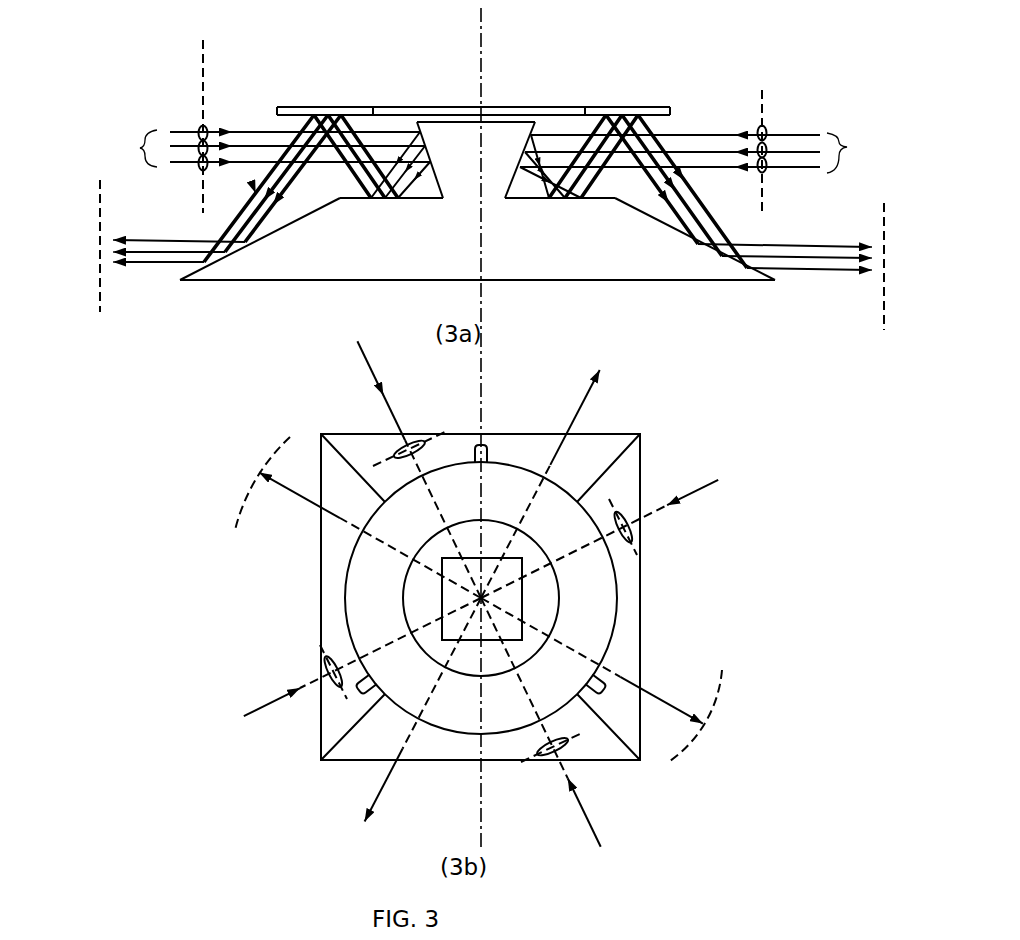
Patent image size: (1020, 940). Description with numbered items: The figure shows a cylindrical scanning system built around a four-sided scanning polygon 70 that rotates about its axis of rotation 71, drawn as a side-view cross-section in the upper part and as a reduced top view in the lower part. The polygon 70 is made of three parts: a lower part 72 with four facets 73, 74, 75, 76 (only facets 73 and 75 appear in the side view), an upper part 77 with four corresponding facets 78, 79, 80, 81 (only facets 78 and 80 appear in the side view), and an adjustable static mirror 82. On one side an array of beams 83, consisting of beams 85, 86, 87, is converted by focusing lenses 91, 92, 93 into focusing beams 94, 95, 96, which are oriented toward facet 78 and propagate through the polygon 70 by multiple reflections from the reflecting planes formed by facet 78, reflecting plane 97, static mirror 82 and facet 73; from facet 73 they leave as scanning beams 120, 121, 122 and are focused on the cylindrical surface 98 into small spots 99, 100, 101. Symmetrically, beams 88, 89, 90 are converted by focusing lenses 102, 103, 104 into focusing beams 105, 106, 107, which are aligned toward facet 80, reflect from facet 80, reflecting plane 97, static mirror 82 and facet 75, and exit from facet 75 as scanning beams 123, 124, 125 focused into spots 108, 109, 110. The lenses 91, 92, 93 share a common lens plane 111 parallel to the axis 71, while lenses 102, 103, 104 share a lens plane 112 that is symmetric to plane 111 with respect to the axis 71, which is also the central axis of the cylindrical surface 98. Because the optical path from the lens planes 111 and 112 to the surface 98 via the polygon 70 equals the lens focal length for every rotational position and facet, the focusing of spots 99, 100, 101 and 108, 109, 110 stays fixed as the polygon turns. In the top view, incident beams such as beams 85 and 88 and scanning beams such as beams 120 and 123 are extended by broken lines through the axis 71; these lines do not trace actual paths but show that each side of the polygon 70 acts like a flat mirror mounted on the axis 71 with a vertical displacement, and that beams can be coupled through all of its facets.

The scanning polygon 70 is at (267, 274).
The axis of rotation 71 is at (483, 47).
The lower part 72 is at (600, 272).
The facet 73 is at (742, 273).
The facet 74 is at (510, 448).
The facet 75 is at (220, 267).
The facet 76 is at (448, 760).
The upper part 77 is at (492, 127).
The facet 78 is at (503, 193).
The facet 79 is at (463, 558).
The facet 80 is at (447, 193).
The facet 81 is at (140, 148).
The static mirror 82 is at (605, 115).
The array of beams 83 is at (847, 147).
The beam 85 is at (790, 133).
The beam 86 is at (793, 152).
The beam 87 is at (800, 168).
The beam 88 is at (177, 147).
The beam 89 is at (172, 152).
The beam 90 is at (183, 163).
The focusing lens 91 is at (758, 132).
The focusing lens 92 is at (763, 173).
The focusing lens 93 is at (753, 183).
The focusing beam 94 is at (685, 133).
The focusing beam 95 is at (708, 148).
The focusing beam 96 is at (712, 168).
The reflecting plane 97 is at (358, 200).
The cylindrical surface 98 is at (100, 312).
The spot 99 is at (897, 277).
The spot 100 is at (882, 257).
The spot 101 is at (885, 247).
The focusing lens 102 is at (210, 127).
The focusing lens 103 is at (207, 172).
The focusing lens 104 is at (198, 170).
The focusing beam 105 is at (220, 132).
The focusing beam 106 is at (267, 147).
The focusing beam 107 is at (250, 165).
The spot 108 is at (100, 262).
The spot 109 is at (100, 252).
The spot 110 is at (100, 240).
The lens plane 111 is at (768, 97).
The lens plane 112 is at (203, 60).
The scanning beam 120 is at (797, 272).
The scanning beam 121 is at (832, 263).
The scanning beam 122 is at (820, 247).
The scanning beam 123 is at (143, 263).
The scanning beam 124 is at (182, 253).
The scanning beam 125 is at (148, 240).